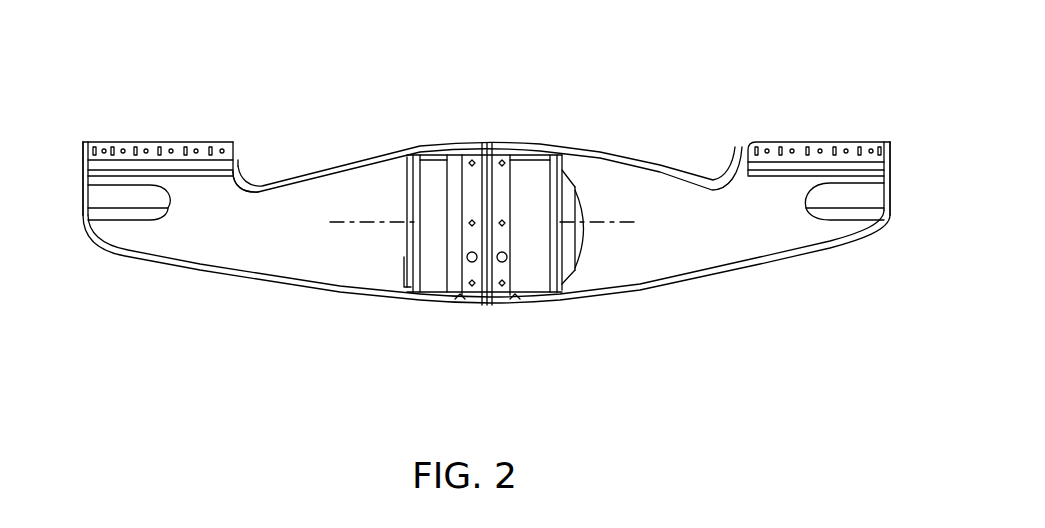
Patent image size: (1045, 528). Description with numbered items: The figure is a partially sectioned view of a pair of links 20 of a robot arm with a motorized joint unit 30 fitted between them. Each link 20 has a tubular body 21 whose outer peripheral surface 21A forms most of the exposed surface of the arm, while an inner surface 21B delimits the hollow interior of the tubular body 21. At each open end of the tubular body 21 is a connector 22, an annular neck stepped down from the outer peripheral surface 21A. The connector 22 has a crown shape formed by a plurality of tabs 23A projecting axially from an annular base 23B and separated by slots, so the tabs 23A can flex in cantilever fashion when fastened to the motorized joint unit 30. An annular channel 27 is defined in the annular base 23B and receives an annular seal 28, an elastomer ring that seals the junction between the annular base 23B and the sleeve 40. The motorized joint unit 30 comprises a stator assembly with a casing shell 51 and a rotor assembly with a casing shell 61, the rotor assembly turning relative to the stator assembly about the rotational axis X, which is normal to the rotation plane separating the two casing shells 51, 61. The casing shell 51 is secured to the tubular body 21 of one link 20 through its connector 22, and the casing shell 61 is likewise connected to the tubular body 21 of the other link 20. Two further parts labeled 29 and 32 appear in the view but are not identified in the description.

The link 20 is at (315, 112).
The tubular body 21 is at (208, 270).
The outer peripheral surface 21A is at (258, 283).
The inner surface 21B is at (277, 275).
The connector 22 is at (218, 124).
The tab 23A is at (238, 146).
The annular base 23B is at (240, 161).
The annular channel 27 is at (82, 163).
The annular seal 28 is at (442, 146).
The right plate 29 is at (512, 148).
The motorized joint unit 30 is at (526, 268).
The holes 32 is at (500, 197).
The sleeve 40 is at (497, 145).
The casing shell 51 is at (531, 191).
The casing shell 61 is at (433, 190).
The rotational axis X is at (485, 204).